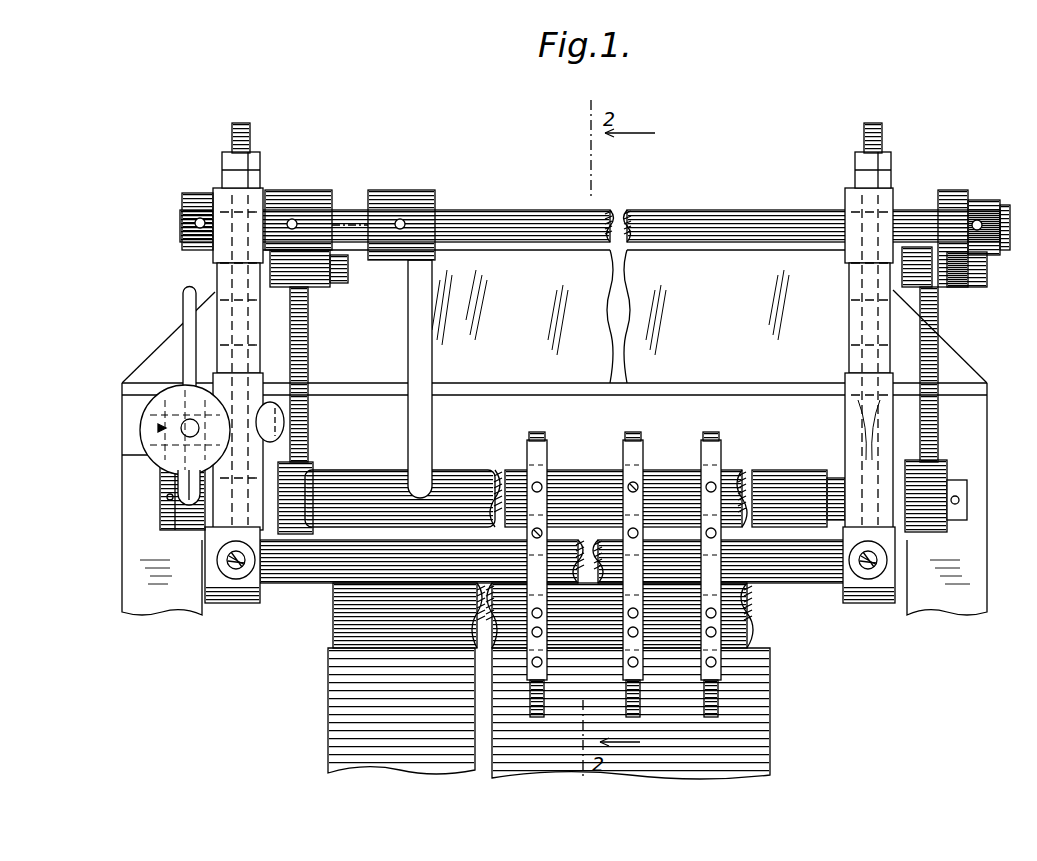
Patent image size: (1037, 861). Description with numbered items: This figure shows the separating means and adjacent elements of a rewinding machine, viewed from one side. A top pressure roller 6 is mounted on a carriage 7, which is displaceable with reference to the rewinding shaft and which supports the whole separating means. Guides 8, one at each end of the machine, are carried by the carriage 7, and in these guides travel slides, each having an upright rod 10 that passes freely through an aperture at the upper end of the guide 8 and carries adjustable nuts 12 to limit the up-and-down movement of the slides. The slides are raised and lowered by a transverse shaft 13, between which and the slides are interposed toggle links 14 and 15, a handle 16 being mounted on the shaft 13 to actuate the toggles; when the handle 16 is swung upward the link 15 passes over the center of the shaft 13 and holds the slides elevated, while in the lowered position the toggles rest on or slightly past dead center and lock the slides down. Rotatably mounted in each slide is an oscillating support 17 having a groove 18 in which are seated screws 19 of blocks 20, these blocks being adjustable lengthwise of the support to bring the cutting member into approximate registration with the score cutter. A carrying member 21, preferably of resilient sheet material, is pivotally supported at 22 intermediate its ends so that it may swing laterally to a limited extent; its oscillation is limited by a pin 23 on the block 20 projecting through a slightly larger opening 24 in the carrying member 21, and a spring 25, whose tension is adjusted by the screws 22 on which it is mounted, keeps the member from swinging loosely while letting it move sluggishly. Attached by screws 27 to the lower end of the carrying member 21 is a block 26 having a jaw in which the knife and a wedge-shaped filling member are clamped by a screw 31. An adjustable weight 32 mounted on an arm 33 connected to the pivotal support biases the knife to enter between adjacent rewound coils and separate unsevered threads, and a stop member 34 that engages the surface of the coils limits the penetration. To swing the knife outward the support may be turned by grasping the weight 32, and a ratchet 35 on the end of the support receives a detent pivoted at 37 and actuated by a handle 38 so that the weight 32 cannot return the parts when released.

The top pressure roller 6 is at (333, 615).
The carriage 7 is at (553, 316).
The guide 8 is at (216, 262).
The upright rod 10 is at (248, 130).
The adjustable nut 12 is at (857, 165).
The transverse shaft 13 is at (705, 210).
The toggle link 14 is at (300, 349).
The toggle link 15 is at (325, 215).
The handle 16 is at (421, 446).
The oscillating support 17 is at (462, 490).
The groove 18 is at (785, 478).
The screw 19 is at (541, 437).
The block 20 is at (545, 463).
The carrying member 21 is at (740, 478).
The pivotal support screw 22 is at (640, 546).
The pin 23 is at (530, 483).
The opening 24 is at (626, 488).
The spring 25 is at (532, 531).
The block 26 is at (755, 651).
The screw 27 is at (748, 630).
The screw 31 is at (775, 665).
The adjustable weight 32 is at (145, 427).
The arm 33 is at (178, 481).
The stop member 34 is at (640, 700).
The ratchet 35 is at (170, 455).
The pivot 37 is at (158, 428).
The handle 38 is at (185, 298).